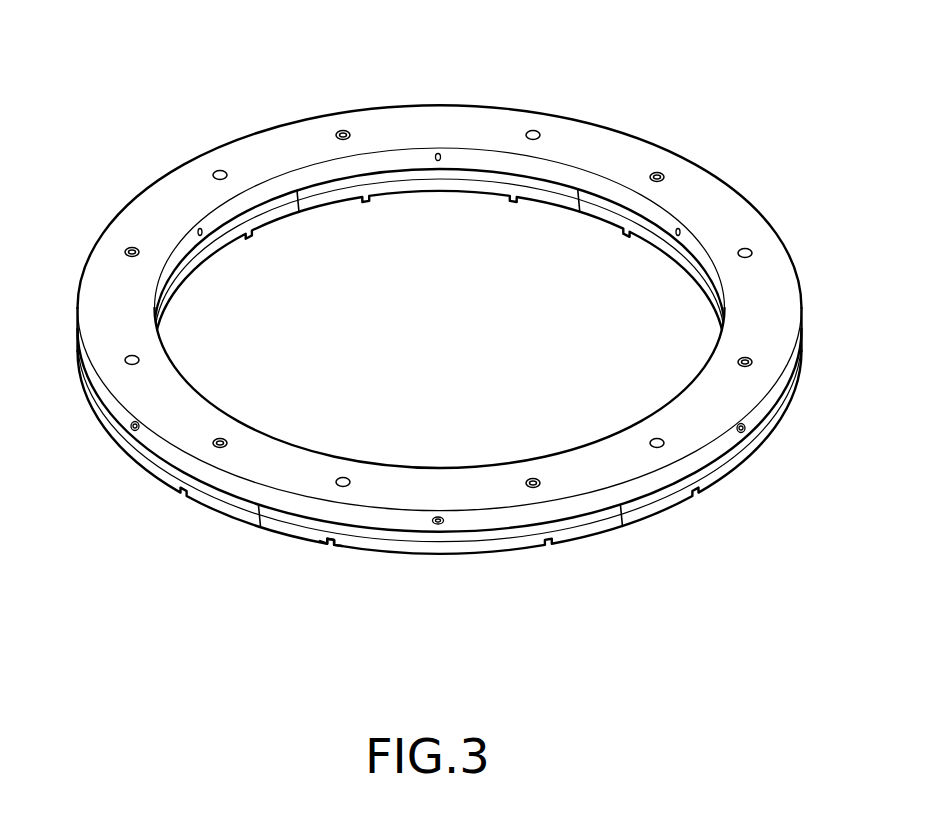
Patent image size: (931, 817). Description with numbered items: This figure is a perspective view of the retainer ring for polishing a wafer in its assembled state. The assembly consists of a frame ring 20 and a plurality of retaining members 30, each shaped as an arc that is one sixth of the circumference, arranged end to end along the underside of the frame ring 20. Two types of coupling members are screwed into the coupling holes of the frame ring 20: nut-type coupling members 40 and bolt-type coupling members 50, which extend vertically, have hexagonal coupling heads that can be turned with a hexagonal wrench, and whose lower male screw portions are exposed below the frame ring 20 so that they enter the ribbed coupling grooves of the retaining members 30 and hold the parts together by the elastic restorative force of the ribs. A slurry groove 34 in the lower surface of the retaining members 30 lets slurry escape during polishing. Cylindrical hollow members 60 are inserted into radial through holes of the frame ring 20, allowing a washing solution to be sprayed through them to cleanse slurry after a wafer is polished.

The frame ring 20 is at (460, 96).
The retaining members 30 is at (126, 473).
The slurry groove 34 is at (328, 547).
The nut-type coupling member 40 is at (348, 107).
The bolt-type coupling member 50 is at (540, 111).
The hollow member 60 is at (748, 443).